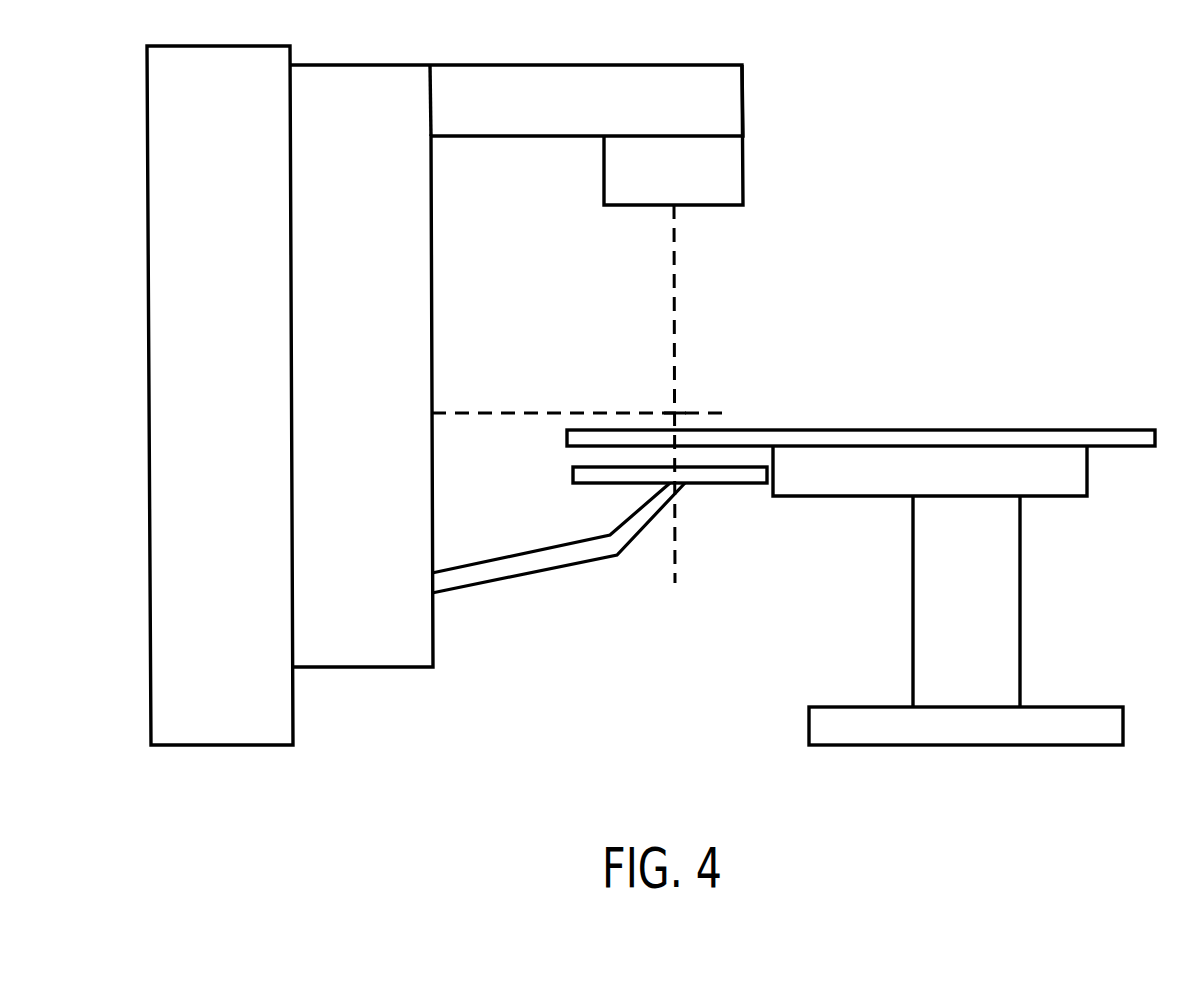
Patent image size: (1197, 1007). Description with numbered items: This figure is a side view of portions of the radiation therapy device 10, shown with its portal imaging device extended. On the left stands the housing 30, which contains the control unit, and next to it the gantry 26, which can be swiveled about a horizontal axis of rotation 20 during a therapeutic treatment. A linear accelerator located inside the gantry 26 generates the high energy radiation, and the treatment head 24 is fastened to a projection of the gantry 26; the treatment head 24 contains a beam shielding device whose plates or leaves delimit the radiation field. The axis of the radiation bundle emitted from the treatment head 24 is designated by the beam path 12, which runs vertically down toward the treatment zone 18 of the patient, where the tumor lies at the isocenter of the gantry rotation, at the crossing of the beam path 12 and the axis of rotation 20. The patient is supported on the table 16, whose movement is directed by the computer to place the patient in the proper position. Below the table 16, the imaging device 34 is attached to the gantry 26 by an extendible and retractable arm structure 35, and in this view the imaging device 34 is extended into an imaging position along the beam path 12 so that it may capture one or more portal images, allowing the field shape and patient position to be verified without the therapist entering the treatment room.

The radiation therapy device 10 is at (651, 395).
The beam path 12 is at (676, 271).
The table 16 is at (790, 430).
The treatment zone 18 is at (677, 412).
The horizontal axis of rotation 20 is at (477, 412).
The treatment head 24 is at (688, 186).
The gantry 26 is at (375, 332).
The housing 30 is at (233, 429).
The imaging device 34 is at (573, 478).
The arm structure 35 is at (543, 571).